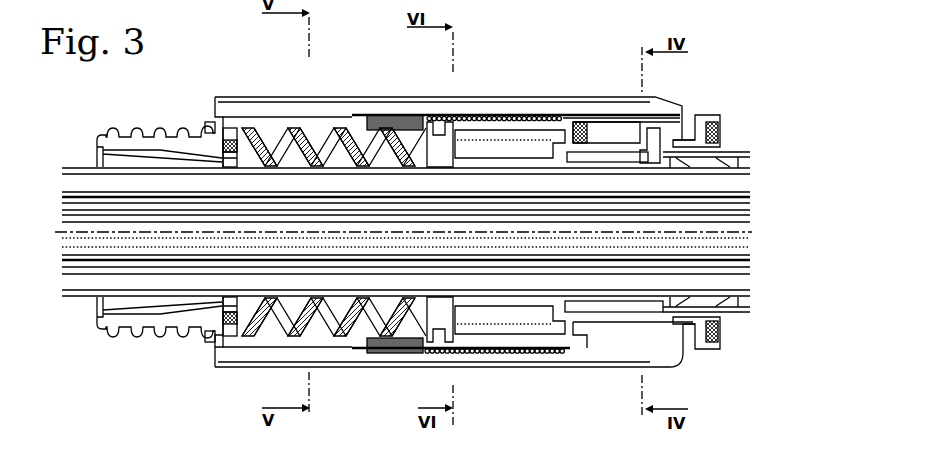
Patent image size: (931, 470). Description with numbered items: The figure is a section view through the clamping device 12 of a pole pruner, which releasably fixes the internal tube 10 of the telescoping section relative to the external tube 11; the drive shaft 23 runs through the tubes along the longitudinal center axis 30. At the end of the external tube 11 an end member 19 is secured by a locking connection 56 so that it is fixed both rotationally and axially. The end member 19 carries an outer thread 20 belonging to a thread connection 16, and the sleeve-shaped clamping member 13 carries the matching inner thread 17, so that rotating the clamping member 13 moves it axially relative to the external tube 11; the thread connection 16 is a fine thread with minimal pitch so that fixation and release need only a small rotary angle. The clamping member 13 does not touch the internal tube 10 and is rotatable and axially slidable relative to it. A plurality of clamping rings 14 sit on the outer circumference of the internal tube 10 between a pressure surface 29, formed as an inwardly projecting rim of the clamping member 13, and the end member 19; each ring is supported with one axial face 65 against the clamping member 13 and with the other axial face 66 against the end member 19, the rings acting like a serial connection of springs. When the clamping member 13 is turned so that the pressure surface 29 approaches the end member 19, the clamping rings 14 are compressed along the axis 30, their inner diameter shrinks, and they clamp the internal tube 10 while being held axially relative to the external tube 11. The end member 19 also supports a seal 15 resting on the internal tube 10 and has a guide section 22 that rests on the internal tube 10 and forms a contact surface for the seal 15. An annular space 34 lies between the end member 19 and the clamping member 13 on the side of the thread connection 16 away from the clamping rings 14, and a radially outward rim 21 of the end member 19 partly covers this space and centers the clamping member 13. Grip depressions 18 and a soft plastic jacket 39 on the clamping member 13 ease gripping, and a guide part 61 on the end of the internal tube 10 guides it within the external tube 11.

The internal tube 10 is at (83, 170).
The external tube 11 is at (733, 153).
The clamping device 12 is at (222, 85).
The clamping member 13 is at (323, 108).
The clamping rings 14 is at (298, 137).
The seal 15 is at (438, 308).
The thread connection 16 is at (482, 111).
The inner thread 17 is at (407, 113).
The grip depressions 18 is at (180, 127).
The end member 19 is at (608, 322).
The outer thread 20 is at (520, 127).
The rim 21 is at (703, 349).
The guide section 22 is at (490, 302).
The drive shaft 23 is at (82, 282).
The pressure surface 29 is at (240, 335).
The longitudinal center axis 30 is at (68, 235).
The annular space 34 is at (673, 128).
The jacket 39 is at (385, 365).
The locking connection 56 is at (639, 141).
The guide part 61 is at (697, 160).
The axial face 65 is at (240, 128).
The axial face 66 is at (262, 305).